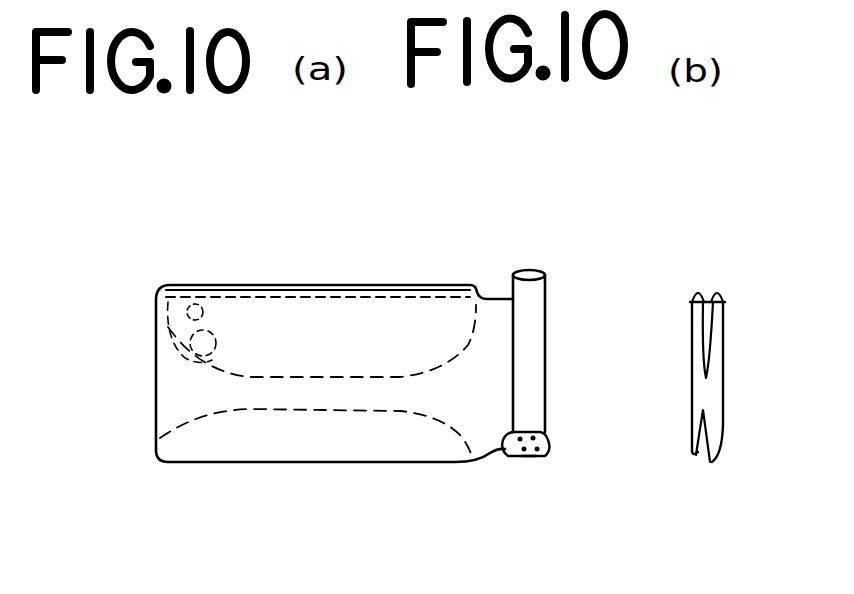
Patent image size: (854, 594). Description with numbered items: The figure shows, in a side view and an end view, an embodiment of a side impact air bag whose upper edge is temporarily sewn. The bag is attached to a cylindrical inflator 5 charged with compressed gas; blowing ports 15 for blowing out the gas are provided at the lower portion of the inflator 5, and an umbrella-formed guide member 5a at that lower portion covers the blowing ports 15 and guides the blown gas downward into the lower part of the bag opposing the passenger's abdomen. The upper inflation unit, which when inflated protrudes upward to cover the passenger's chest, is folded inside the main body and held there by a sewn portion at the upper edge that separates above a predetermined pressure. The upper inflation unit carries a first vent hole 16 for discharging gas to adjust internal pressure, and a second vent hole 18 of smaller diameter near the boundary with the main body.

The inflator 5 is at (535, 336).
The guide member 5a is at (545, 437).
The blowing ports 15 is at (527, 458).
The first vent hole 16 is at (157, 323).
The second vent hole 18 is at (197, 296).